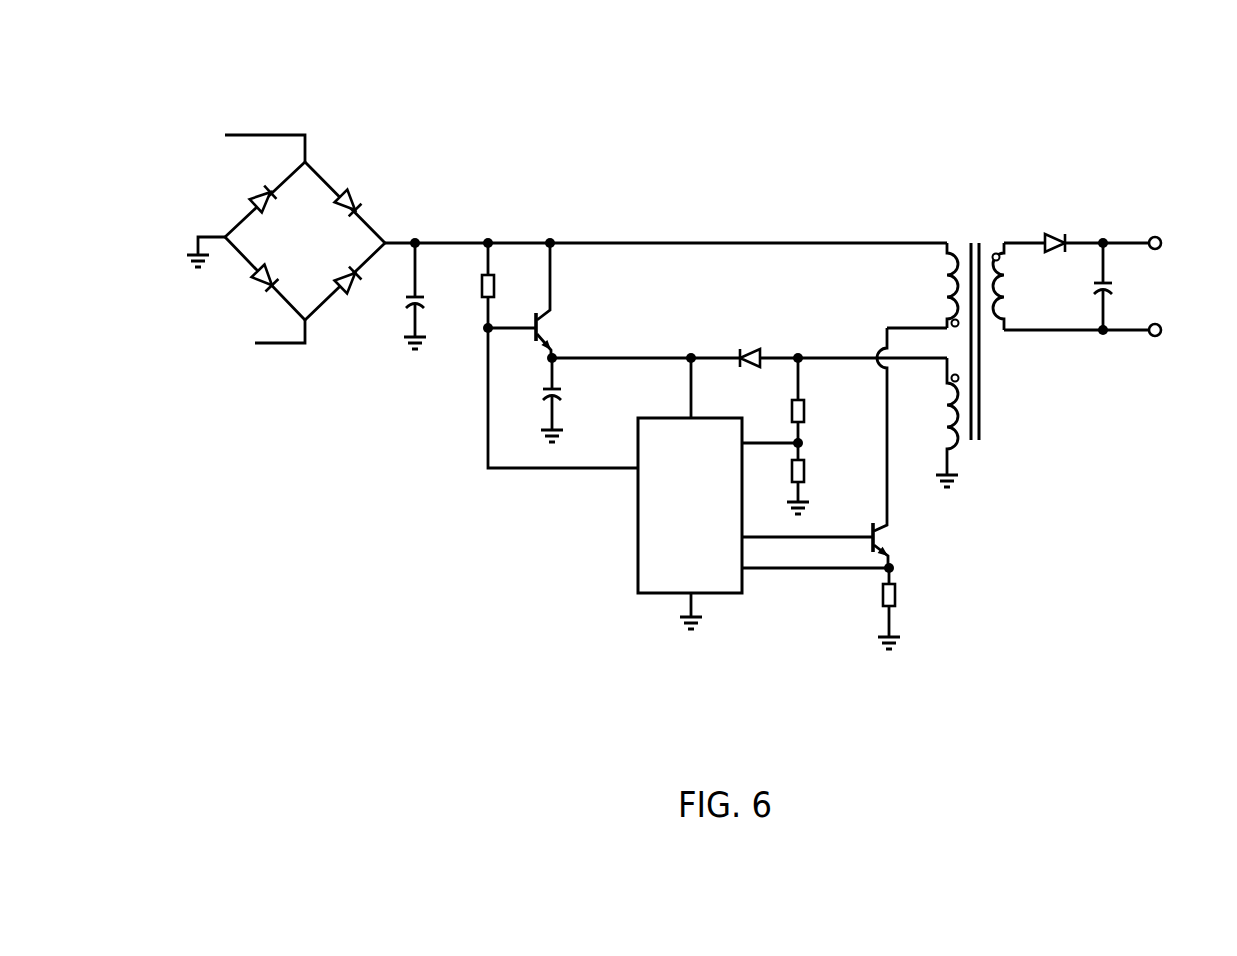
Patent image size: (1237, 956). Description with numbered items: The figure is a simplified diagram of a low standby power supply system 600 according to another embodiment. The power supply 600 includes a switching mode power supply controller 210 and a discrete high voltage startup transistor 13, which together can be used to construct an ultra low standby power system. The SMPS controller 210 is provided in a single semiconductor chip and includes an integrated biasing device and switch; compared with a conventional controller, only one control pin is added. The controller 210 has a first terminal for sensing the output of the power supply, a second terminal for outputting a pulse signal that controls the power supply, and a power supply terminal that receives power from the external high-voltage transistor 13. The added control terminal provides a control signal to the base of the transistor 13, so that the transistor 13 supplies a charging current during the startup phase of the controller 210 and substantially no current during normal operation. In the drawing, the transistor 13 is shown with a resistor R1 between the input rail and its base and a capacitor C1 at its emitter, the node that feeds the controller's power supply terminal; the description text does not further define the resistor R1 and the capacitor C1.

The low standby power supply system 600 is at (1062, 100).
The discrete high voltage startup transistor 13 is at (559, 323).
The switching mode power supply controller 210 is at (630, 553).
The start-up resistor R1 is at (480, 286).
The capacitor C1 is at (570, 392).